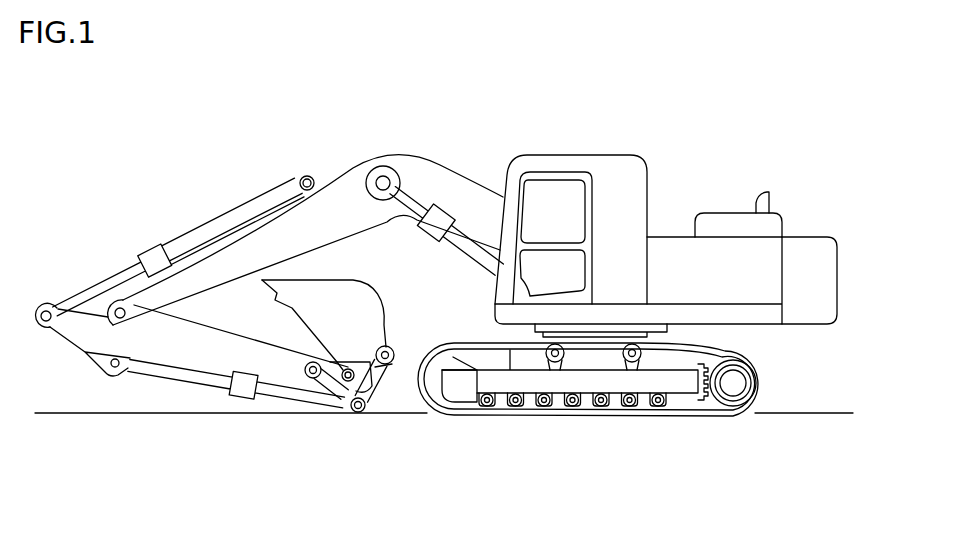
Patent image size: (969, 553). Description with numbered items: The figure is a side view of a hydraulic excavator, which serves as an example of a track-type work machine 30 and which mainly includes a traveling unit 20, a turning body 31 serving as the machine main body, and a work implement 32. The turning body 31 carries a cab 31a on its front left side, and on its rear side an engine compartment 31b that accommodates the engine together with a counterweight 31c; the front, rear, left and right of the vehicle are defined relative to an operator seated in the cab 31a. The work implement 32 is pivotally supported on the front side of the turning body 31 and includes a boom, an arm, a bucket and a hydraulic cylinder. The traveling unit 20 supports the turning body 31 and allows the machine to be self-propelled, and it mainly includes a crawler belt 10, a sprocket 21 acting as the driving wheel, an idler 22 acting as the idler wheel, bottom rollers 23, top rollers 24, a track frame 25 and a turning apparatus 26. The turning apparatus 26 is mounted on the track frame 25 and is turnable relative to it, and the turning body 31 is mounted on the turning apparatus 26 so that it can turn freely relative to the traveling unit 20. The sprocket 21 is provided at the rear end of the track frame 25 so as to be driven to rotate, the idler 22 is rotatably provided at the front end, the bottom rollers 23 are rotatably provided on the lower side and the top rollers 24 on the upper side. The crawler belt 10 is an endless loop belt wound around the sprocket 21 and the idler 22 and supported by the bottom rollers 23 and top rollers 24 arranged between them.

The crawler belt 10 is at (767, 378).
The traveling unit 20 is at (808, 364).
The sprocket 21 is at (738, 372).
The idler 22 is at (437, 386).
The bottom roller 23 is at (502, 401).
The top roller 24 is at (544, 356).
The track frame 25 is at (654, 355).
The turning apparatus 26 is at (592, 337).
The track-type work machine 30 is at (686, 91).
The turning body 31 is at (748, 140).
The cab 31a is at (557, 160).
The engine compartment 31b is at (714, 223).
The counterweight 31c is at (814, 250).
The work implement 32 is at (353, 130).